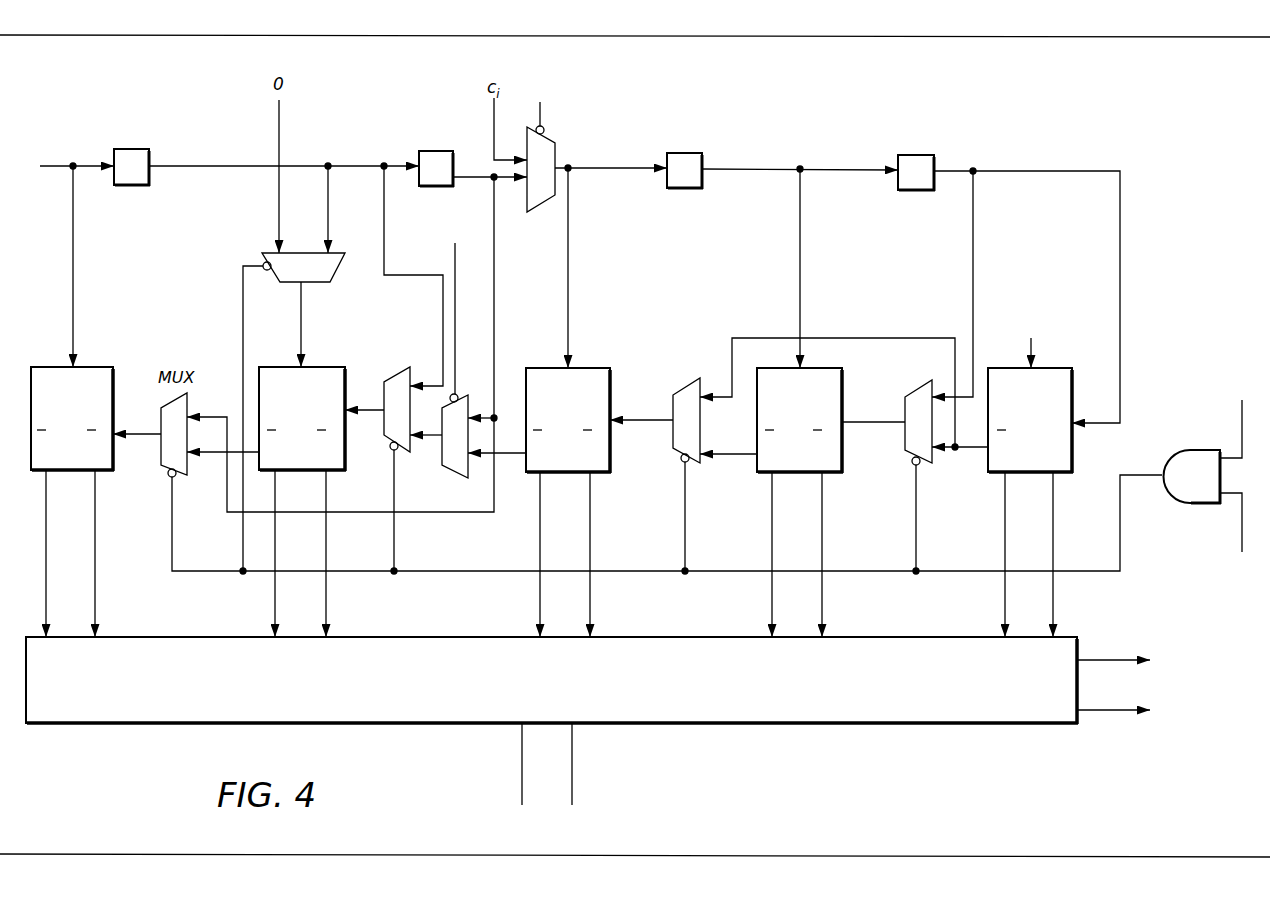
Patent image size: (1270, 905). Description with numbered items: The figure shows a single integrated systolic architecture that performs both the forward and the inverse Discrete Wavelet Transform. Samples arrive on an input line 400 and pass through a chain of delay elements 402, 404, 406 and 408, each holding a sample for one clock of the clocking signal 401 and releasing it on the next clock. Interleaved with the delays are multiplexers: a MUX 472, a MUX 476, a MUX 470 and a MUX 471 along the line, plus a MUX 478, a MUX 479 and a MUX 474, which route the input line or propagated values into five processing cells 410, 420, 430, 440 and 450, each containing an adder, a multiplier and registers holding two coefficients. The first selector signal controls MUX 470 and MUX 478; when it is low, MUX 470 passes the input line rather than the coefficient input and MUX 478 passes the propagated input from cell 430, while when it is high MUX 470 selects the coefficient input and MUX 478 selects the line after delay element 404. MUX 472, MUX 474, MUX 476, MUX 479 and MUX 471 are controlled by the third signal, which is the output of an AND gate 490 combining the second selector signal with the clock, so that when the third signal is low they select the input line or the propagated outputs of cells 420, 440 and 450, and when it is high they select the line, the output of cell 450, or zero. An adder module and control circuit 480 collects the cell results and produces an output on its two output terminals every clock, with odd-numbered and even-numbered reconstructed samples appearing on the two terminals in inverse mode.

The input line 400 is at (60, 168).
The clocking signal 401 is at (1240, 487).
The delay element 402 is at (130, 149).
The delay element 404 is at (439, 151).
The delay element 406 is at (682, 153).
The delay element 408 is at (957, 129).
The processing cell 410 is at (88, 399).
The processing cell 420 is at (317, 399).
The processing cell 430 is at (583, 400).
The processing cell 440 is at (814, 400).
The processing cell 450 is at (1045, 400).
The multiplexer 470 is at (559, 160).
The multiplexer 471 is at (935, 462).
The multiplexer 472 is at (317, 280).
The multiplexer 474 is at (190, 465).
The multiplexer 476 is at (384, 382).
The multiplexer 478 is at (447, 469).
The multiplexer 479 is at (697, 462).
The adder module and control circuit 480 is at (1043, 704).
The AND gate 490 is at (1190, 450).